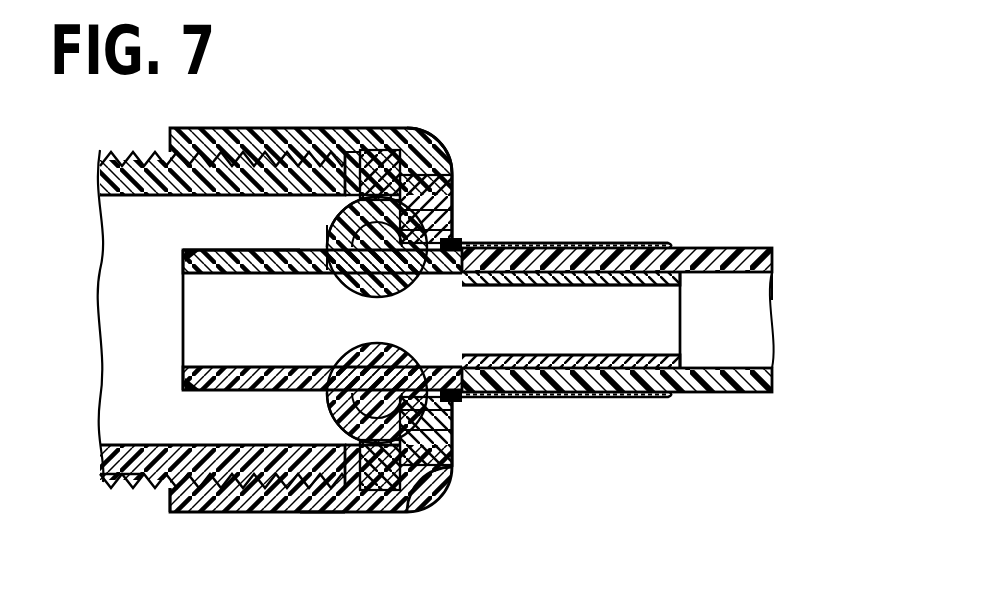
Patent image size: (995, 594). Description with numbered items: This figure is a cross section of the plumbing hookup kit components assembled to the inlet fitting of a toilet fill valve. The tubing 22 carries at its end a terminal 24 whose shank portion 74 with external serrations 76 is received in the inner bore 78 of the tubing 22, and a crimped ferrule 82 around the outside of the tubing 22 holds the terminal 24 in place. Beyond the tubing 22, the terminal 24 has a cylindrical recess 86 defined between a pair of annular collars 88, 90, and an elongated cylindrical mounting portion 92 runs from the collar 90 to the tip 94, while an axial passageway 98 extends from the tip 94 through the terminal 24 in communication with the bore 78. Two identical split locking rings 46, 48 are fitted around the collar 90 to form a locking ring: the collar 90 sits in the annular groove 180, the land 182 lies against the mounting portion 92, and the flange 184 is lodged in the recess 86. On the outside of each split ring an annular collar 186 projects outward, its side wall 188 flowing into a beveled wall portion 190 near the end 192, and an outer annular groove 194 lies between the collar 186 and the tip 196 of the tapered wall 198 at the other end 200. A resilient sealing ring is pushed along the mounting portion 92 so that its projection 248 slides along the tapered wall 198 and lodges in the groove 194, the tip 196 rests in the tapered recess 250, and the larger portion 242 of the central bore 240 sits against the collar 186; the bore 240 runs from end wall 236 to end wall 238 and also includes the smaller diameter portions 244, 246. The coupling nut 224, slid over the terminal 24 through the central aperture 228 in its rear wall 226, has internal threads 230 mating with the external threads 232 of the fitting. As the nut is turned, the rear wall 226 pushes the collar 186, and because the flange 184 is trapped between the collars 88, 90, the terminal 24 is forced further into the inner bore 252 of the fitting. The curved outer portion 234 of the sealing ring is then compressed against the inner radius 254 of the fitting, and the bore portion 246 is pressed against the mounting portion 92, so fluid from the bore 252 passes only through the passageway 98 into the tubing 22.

The tubing 22 is at (755, 262).
The terminal 24 is at (500, 203).
The split locking ring 46 is at (362, 270).
The split locking ring 48 is at (440, 370).
The shank portion 74 is at (672, 282).
The external serrations 76 is at (598, 250).
The inner bore 78 is at (768, 282).
The crimped ferrule 82 is at (614, 243).
The cylindrical recess 86 is at (420, 370).
The annular collar 88 is at (470, 232).
The annular collar 90 is at (402, 370).
The elongated cylindrical mounting portion 92 is at (235, 250).
The tip 94 is at (183, 260).
The axial passageway 98 is at (655, 285).
The annular groove 180 is at (377, 272).
The annular land 182 is at (430, 272).
The annular flange 184 is at (332, 270).
The annular collar 186 is at (445, 166).
The side wall 188 is at (462, 188).
The beveled wall portion 190 is at (456, 216).
The end 192 is at (452, 270).
The outer annular groove 194 is at (420, 152).
The tip 196 is at (372, 152).
The tapered wall 198 is at (348, 152).
The other end 200 is at (330, 238).
The coupling nut 224 is at (256, 498).
The rear wall 226 is at (450, 484).
The central aperture 228 is at (445, 410).
The internal threads 230 is at (206, 500).
The external threads 232 is at (136, 490).
The curved outer portion 234 is at (332, 492).
The end wall 236 is at (330, 400).
The end wall 238 is at (440, 500).
The central bore 240 is at (320, 367).
The larger portion 242 is at (448, 450).
The smaller diameter portion 244 is at (365, 370).
The smaller diameter portion 246 is at (335, 370).
The projection 248 is at (385, 472).
The tapered recess 250 is at (372, 480).
The inner bore 252 is at (272, 196).
The inner radius 254 is at (332, 440).